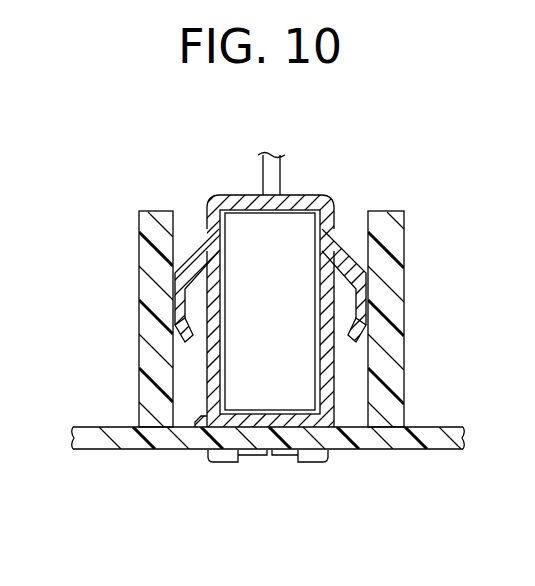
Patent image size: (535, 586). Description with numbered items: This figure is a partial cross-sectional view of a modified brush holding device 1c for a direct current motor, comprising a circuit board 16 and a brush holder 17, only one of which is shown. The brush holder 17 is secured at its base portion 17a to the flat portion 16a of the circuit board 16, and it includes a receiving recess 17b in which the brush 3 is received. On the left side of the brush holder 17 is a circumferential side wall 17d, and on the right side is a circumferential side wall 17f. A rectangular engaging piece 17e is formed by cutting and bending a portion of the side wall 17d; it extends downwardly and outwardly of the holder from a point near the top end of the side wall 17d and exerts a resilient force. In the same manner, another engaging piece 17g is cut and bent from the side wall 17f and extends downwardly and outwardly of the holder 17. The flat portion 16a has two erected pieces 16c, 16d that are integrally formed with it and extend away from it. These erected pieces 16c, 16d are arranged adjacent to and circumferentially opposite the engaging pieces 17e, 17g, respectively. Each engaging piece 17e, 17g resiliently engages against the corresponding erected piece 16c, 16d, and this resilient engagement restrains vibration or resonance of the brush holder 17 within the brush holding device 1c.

The brush holding device 1c is at (417, 510).
The brush 3 is at (300, 227).
The circuit board 16 is at (405, 450).
The flat portion 16a is at (103, 425).
The erected piece 16c is at (140, 247).
The erected piece 16d is at (402, 250).
The brush holder 17 is at (332, 383).
The base portion 17a is at (195, 428).
The receiving recess 17b is at (322, 282).
The side wall 17d is at (208, 227).
The engaging piece 17e is at (185, 307).
The side wall 17f is at (346, 247).
The engaging piece 17g is at (349, 250).